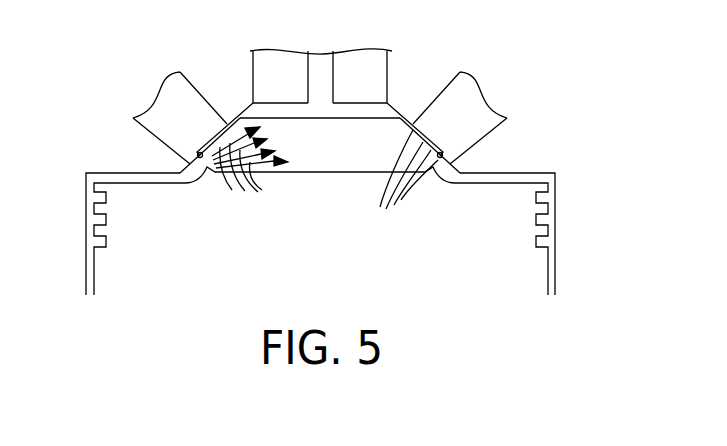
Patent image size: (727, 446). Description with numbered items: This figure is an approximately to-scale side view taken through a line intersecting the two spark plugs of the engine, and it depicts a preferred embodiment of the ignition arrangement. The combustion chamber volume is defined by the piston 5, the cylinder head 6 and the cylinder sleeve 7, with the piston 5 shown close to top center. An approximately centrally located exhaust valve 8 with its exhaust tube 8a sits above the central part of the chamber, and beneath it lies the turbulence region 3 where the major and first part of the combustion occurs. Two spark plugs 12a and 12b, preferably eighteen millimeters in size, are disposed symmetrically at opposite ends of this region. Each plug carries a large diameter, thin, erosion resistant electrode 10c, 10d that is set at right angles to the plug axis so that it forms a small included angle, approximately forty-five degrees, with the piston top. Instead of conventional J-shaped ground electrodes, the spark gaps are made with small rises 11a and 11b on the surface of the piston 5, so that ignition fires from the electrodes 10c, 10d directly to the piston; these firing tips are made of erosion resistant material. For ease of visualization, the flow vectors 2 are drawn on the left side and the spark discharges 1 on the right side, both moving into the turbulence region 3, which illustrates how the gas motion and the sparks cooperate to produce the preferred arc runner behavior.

The spark discharges 1 is at (404, 176).
The flow vectors 2 is at (239, 174).
The turbulence region 3 is at (329, 153).
The piston 5 is at (509, 250).
The cylinder head 6 is at (519, 162).
The cylinder sleeve 7 is at (556, 228).
The exhaust valve 8 is at (352, 102).
The exhaust tube 8a is at (392, 60).
The electrode tip 10c is at (216, 133).
The electrode tip 10d is at (430, 130).
The ground electrode rise 11a is at (203, 180).
The ground electrode rise 11b is at (432, 177).
The spark plug 12a is at (163, 143).
The spark plug 12b is at (492, 110).